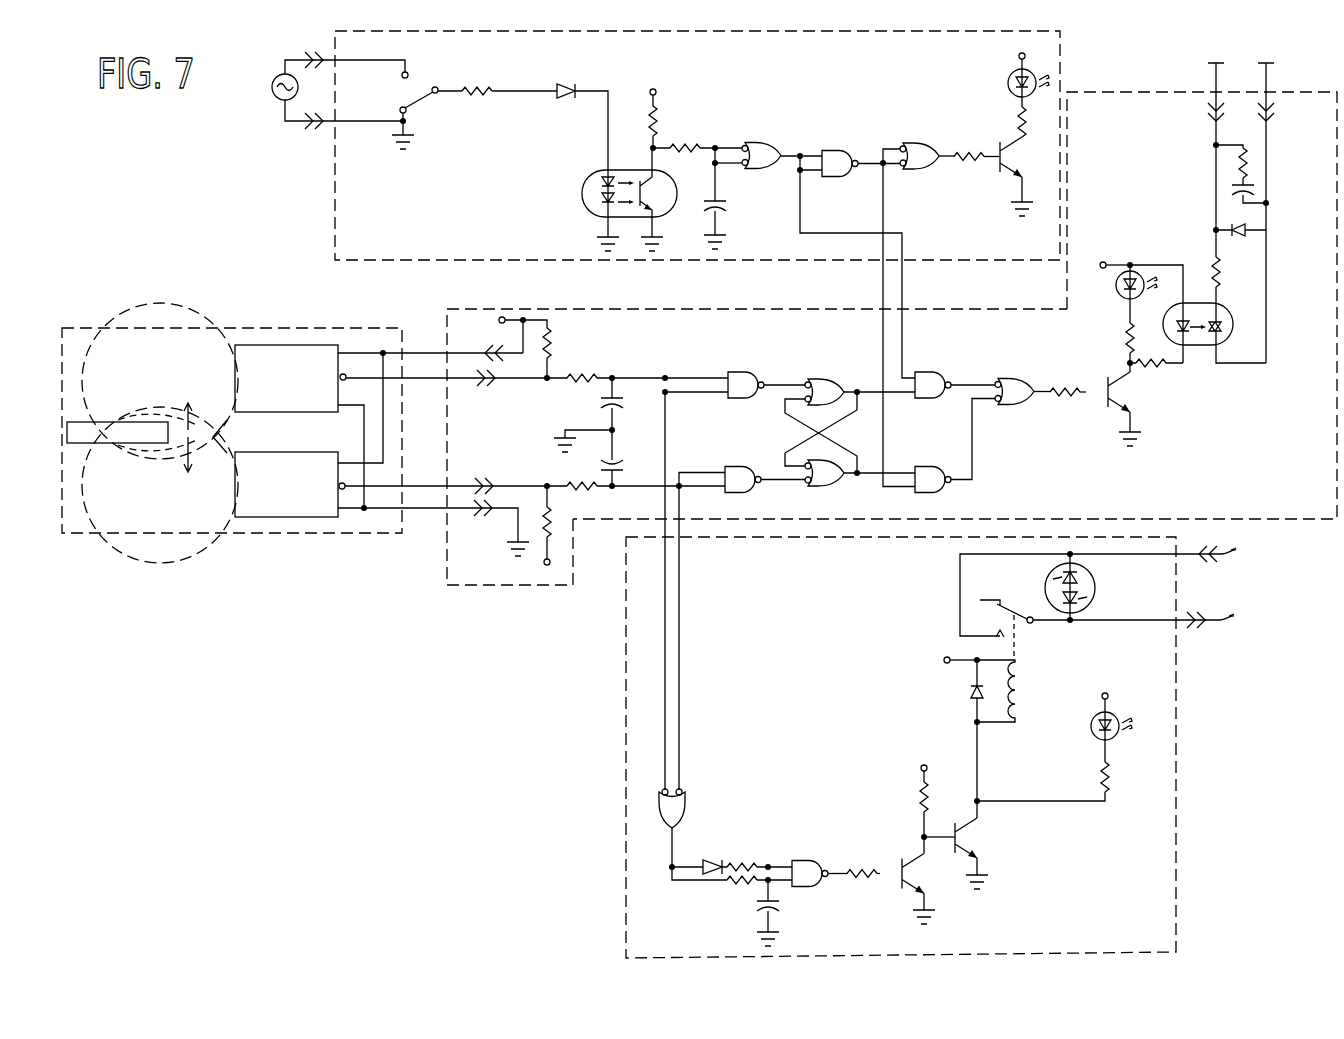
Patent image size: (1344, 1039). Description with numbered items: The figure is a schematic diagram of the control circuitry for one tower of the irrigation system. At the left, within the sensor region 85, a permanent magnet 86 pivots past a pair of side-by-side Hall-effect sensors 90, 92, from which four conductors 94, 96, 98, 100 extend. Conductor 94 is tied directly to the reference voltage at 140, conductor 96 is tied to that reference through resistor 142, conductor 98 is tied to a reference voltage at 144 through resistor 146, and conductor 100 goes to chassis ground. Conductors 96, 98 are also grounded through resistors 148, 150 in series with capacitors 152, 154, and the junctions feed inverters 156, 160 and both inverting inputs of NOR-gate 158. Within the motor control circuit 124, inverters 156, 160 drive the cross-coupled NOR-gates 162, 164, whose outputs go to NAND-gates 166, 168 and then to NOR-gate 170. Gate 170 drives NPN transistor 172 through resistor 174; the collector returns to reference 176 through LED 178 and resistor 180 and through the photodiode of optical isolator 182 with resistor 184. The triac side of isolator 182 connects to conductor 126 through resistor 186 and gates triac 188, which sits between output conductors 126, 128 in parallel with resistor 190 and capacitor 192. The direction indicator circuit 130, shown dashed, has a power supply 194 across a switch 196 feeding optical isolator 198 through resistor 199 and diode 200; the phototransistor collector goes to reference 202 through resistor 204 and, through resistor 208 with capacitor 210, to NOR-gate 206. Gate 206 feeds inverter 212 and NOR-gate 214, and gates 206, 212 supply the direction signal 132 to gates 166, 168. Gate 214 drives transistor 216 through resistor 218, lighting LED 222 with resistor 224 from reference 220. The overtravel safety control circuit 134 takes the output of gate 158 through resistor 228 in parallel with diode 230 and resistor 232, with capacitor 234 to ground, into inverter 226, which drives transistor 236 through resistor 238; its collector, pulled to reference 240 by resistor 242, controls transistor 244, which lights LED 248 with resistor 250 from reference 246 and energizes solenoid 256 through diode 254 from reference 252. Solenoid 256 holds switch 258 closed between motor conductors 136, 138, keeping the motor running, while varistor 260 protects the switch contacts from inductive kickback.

The magnetic field region 85 is at (90, 296).
The permanent magnet 86 is at (100, 440).
The Hall-effect sensor 90 is at (303, 344).
The Hall-effect sensor 92 is at (280, 518).
The conductor 94 is at (420, 352).
The conductor 96 is at (428, 377).
The conductor 98 is at (427, 485).
The conductor 100 is at (427, 509).
The motor control circuit 124 is at (548, 592).
The output conductor 126 is at (1213, 72).
The output conductor 128 is at (1272, 82).
The direction indicator circuit 130 is at (335, 158).
The direction signal 132 is at (903, 293).
The overtravel safety control circuit 134 is at (625, 780).
The conductor 136 is at (1232, 563).
The conductor 138 is at (1230, 630).
The reference voltage 140 is at (505, 317).
The resistor 142 is at (550, 343).
The reference voltage 144 is at (543, 563).
The resistor 146 is at (545, 513).
The resistor 148 is at (573, 383).
The resistor 150 is at (580, 482).
The capacitor 152 is at (620, 380).
The capacitor 154 is at (623, 477).
The inverter 156 is at (750, 372).
The NOR-gate 158 is at (685, 798).
The inverter 160 is at (730, 468).
The NOR-gate 162 is at (820, 378).
The NOR-gate 164 is at (825, 487).
The NAND-gate 166 is at (928, 372).
The NAND-gate 168 is at (925, 468).
The NOR-gate 170 is at (1012, 378).
The NPN transistor 172 is at (1105, 402).
The resistor 174 is at (1070, 383).
The reference voltage 176 is at (1102, 262).
The LED 178 is at (1114, 292).
The resistor 180 is at (1126, 345).
The optical isolator 182 is at (1198, 347).
The resistor 184 is at (1157, 373).
The resistor 186 is at (1212, 258).
The triac 188 is at (1250, 224).
The resistor 190 is at (1240, 158).
The capacitor 192 is at (1250, 185).
The power supply 194 is at (277, 97).
The switch 196 is at (438, 87).
The optical isolator 198 is at (582, 193).
The resistor 199 is at (490, 93).
The diode 200 is at (563, 83).
The reference voltage 202 is at (656, 92).
The resistor 204 is at (650, 118).
The NOR-gate 206 is at (760, 143).
The resistor 208 is at (693, 147).
The capacitor 210 is at (725, 196).
The inverter 212 is at (833, 147).
The NOR-gate 214 is at (920, 143).
The common-emitter transistor 216 is at (997, 171).
The resistor 218 is at (967, 152).
The reference voltage 220 is at (1018, 56).
The LED 222 is at (1036, 78).
The resistor 224 is at (1028, 113).
The inverter 226 is at (807, 860).
The resistor 228 is at (733, 883).
The diode 230 is at (710, 861).
The resistor 232 is at (758, 862).
The capacitor 234 is at (778, 897).
The common-emitter transistor 236 is at (895, 880).
The resistor 238 is at (863, 868).
The voltage reference 240 is at (922, 764).
The resistor 242 is at (938, 790).
The common-emitter transistor 244 is at (977, 822).
The reference voltage 246 is at (1108, 697).
The LED 248 is at (1097, 717).
The resistor 250 is at (1100, 780).
The voltage reference 252 is at (943, 660).
The reverse biased diode 254 is at (970, 697).
The solenoid 256 is at (1020, 664).
The switch 258 is at (1012, 606).
The varistor 260 is at (1097, 593).